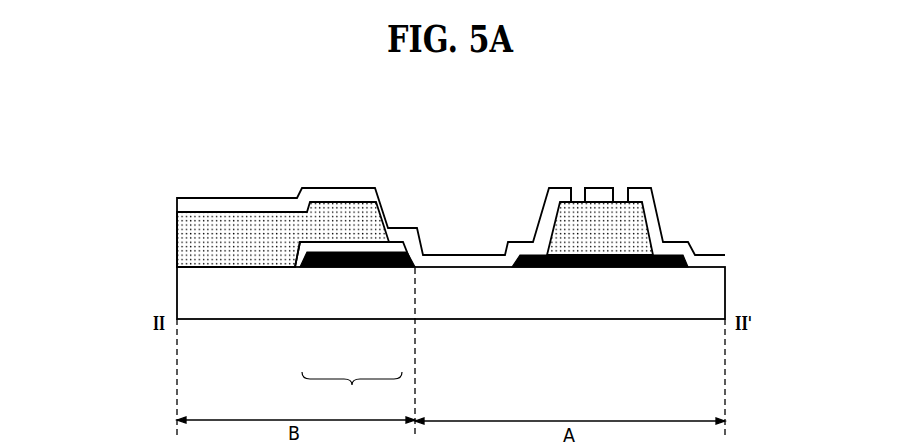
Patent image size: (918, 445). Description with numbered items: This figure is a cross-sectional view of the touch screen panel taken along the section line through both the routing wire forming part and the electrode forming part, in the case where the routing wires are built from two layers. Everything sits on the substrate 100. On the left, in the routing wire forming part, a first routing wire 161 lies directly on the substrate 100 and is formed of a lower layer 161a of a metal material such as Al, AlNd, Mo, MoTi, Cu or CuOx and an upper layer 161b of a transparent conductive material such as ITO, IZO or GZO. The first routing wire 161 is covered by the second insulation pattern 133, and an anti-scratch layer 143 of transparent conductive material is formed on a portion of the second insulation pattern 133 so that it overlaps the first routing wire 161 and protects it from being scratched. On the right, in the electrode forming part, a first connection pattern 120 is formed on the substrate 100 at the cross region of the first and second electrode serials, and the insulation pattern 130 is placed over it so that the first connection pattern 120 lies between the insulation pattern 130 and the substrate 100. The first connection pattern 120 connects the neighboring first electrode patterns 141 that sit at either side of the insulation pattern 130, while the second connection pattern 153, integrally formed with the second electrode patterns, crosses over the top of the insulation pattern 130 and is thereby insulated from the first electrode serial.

The substrate 100 is at (713, 292).
The first connection pattern 120 is at (595, 268).
The insulation pattern 130 is at (637, 230).
The second insulation pattern 133 is at (187, 235).
The first electrode pattern 141 is at (558, 190).
The anti-scratch layer 143 is at (337, 195).
The second connection pattern 153 is at (598, 190).
The first routing wire 161 is at (352, 391).
The lower layer 161a is at (327, 262).
The upper layer 161b is at (378, 246).